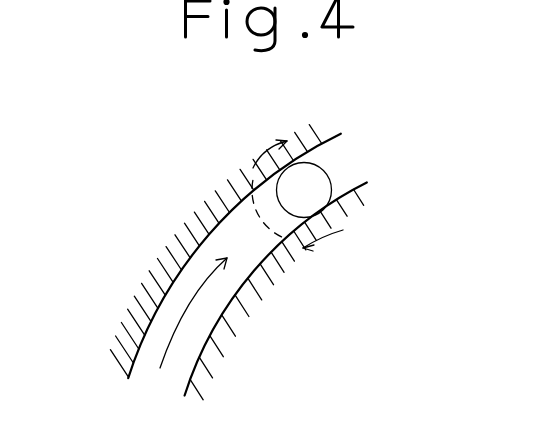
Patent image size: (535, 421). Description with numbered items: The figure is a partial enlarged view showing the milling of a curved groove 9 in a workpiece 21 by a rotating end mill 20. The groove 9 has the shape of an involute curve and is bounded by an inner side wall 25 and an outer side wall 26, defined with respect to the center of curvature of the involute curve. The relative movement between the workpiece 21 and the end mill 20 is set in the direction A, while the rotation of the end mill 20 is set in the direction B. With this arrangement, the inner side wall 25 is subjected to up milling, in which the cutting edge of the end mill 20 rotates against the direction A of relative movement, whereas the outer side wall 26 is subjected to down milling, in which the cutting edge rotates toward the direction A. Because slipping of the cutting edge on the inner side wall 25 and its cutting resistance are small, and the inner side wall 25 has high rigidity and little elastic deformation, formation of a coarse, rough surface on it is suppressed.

The curved groove 9 is at (345, 163).
The end mill 20 is at (320, 192).
The workpiece 21 is at (202, 224).
The inner side wall 25 is at (216, 328).
The outer side wall 26 is at (142, 330).
The direction of relative movement A is at (193, 313).
The direction of rotation B is at (325, 251).